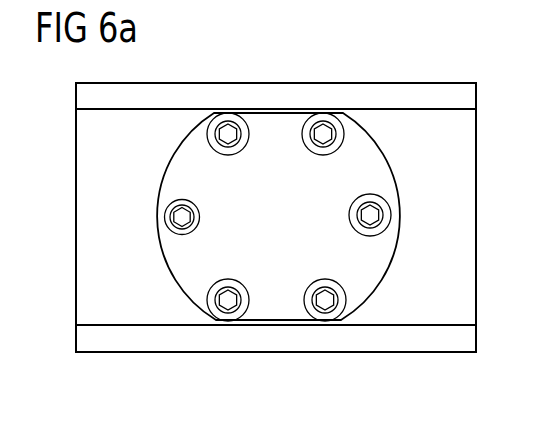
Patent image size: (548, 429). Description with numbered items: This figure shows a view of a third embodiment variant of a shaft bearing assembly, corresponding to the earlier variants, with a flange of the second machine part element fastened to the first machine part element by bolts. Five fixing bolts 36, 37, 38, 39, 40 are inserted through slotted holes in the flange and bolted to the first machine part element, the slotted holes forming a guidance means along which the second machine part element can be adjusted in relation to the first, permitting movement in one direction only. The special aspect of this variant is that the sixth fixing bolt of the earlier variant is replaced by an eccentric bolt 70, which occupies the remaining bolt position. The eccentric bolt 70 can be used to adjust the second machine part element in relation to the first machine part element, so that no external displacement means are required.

The fixing bolt 36 is at (228, 134).
The fixing bolt 37 is at (323, 134).
The fixing bolt 38 is at (370, 215).
The fixing bolt 39 is at (325, 300).
The fixing bolt 40 is at (228, 300).
The eccentric bolt 70 is at (182, 217).